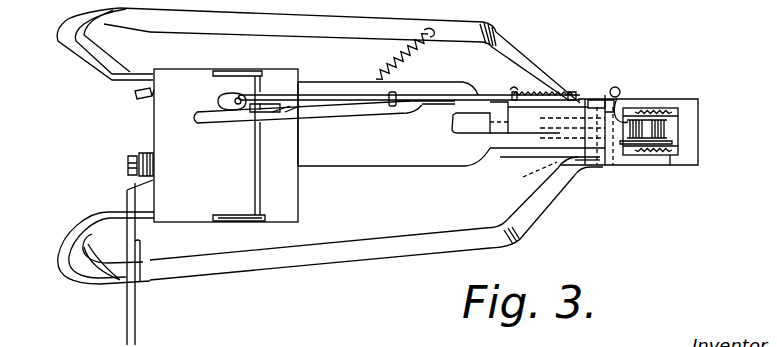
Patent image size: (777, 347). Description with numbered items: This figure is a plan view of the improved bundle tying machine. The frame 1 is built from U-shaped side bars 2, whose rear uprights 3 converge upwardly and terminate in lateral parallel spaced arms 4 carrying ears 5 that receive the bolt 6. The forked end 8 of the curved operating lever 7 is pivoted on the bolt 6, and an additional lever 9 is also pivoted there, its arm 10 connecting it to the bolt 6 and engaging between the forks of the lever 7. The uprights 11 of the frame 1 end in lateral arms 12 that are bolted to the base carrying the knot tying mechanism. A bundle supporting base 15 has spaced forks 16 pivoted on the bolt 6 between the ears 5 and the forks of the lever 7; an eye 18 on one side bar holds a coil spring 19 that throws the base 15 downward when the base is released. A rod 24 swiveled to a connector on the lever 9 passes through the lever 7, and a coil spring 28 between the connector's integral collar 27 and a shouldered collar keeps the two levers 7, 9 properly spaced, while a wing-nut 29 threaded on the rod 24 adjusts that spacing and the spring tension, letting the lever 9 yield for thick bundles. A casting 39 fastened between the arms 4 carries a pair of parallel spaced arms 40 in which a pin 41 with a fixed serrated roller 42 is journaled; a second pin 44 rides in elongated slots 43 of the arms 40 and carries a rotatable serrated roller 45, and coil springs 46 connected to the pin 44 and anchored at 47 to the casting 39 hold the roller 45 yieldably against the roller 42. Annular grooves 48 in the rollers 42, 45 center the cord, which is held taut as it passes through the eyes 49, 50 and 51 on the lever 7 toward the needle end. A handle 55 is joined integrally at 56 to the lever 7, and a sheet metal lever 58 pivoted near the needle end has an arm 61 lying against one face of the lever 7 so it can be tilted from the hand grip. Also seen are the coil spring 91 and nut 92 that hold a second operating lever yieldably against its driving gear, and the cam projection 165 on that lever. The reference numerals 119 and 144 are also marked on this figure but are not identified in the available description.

The frame 1 is at (66, 265).
The side bars 2 is at (514, 55).
The rear uprights 3 is at (549, 75).
The lateral parallel spaced arms 4 is at (648, 107).
The ears 5 is at (602, 97).
The bolt 6 is at (535, 176).
The operating lever 7 is at (417, 97).
The forked end 8 is at (528, 160).
The additional lever 9 is at (471, 123).
The arm 10 is at (488, 146).
The uprights 11 is at (84, 50).
The lateral arms 12 is at (147, 68).
The bundle supporting base 15 is at (395, 168).
The spaced forks 16 is at (477, 92).
The eye 18 is at (432, 29).
The coil spring 19 is at (378, 62).
The rod 24 is at (557, 88).
The collar 27 is at (514, 90).
The coil spring 28 is at (593, 97).
The wing-nut 29 is at (614, 87).
The casting 39 is at (700, 128).
The parallel spaced arms 40 is at (690, 116).
The pin 41 is at (683, 107).
The serrated roller 42 is at (672, 167).
The elongated slots 43 is at (620, 167).
The pin 44 is at (499, 117).
The serrated roller 45 is at (624, 98).
The coil springs 46 is at (667, 107).
The spring connection point 47 is at (693, 110).
The annular depressions or grooves 48 is at (672, 143).
The eye 49 is at (645, 107).
The eye 50 is at (399, 116).
The eye 51 is at (225, 96).
The handle 55 is at (331, 118).
The integral joint 56 is at (425, 118).
The lever 58 is at (266, 103).
The arm 61 is at (280, 108).
The coil-spring 91 is at (142, 152).
The nut 92 is at (128, 166).
The plate 119 is at (256, 70).
The screw 144 is at (136, 96).
The cam projection 165 is at (160, 282).